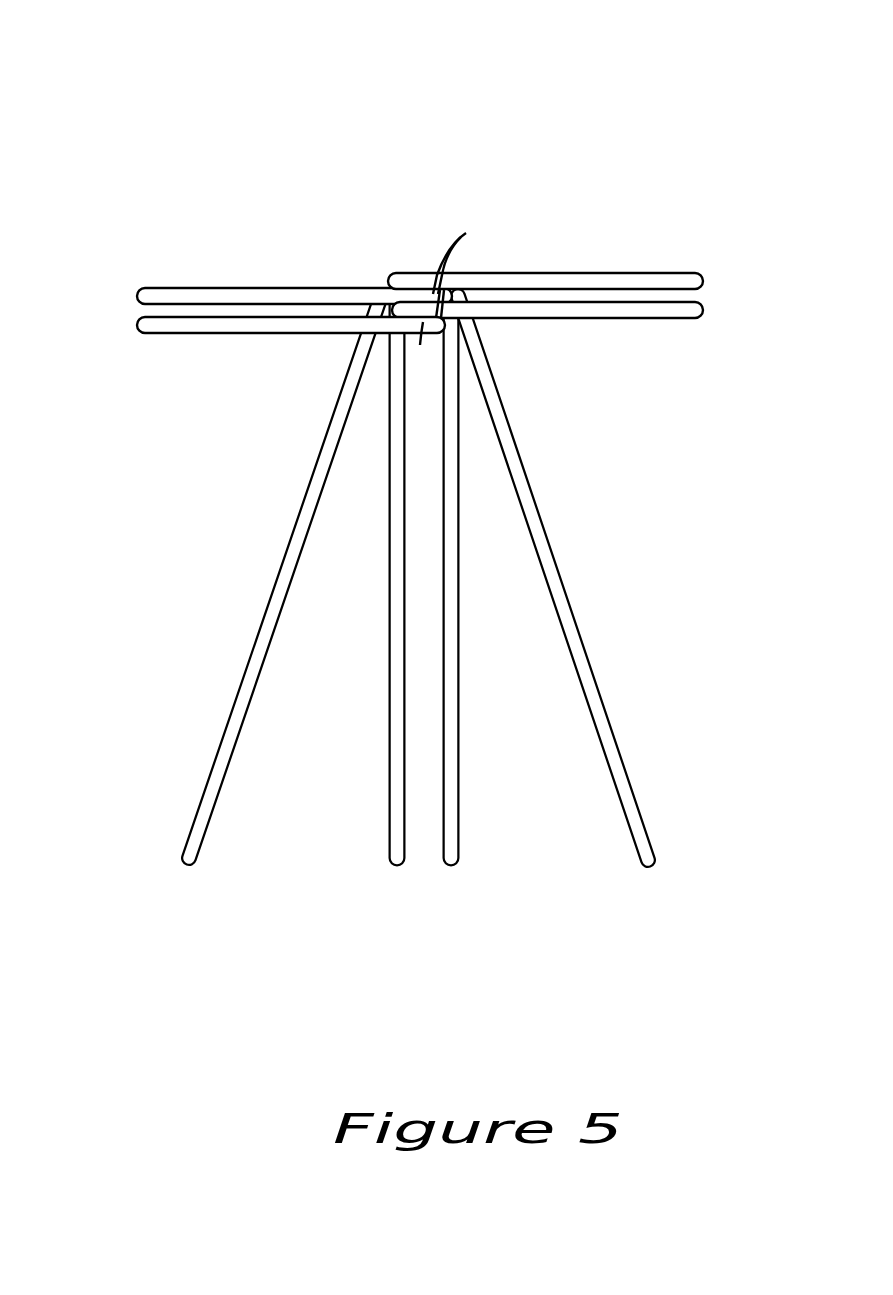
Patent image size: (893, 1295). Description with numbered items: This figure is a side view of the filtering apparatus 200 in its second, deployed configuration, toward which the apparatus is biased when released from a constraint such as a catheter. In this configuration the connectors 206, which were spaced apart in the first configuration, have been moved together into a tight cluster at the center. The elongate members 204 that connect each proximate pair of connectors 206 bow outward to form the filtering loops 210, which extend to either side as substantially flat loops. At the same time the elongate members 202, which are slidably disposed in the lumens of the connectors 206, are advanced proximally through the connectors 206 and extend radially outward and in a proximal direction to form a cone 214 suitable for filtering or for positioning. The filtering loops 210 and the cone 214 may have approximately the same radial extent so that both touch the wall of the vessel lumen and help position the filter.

The filtering apparatus 200 is at (262, 95).
The elongate member 202 is at (662, 677).
The elongate member 204 is at (419, 299).
The connector 206 is at (308, 438).
The filtering loop 210 is at (720, 357).
The cone 214 is at (202, 576).